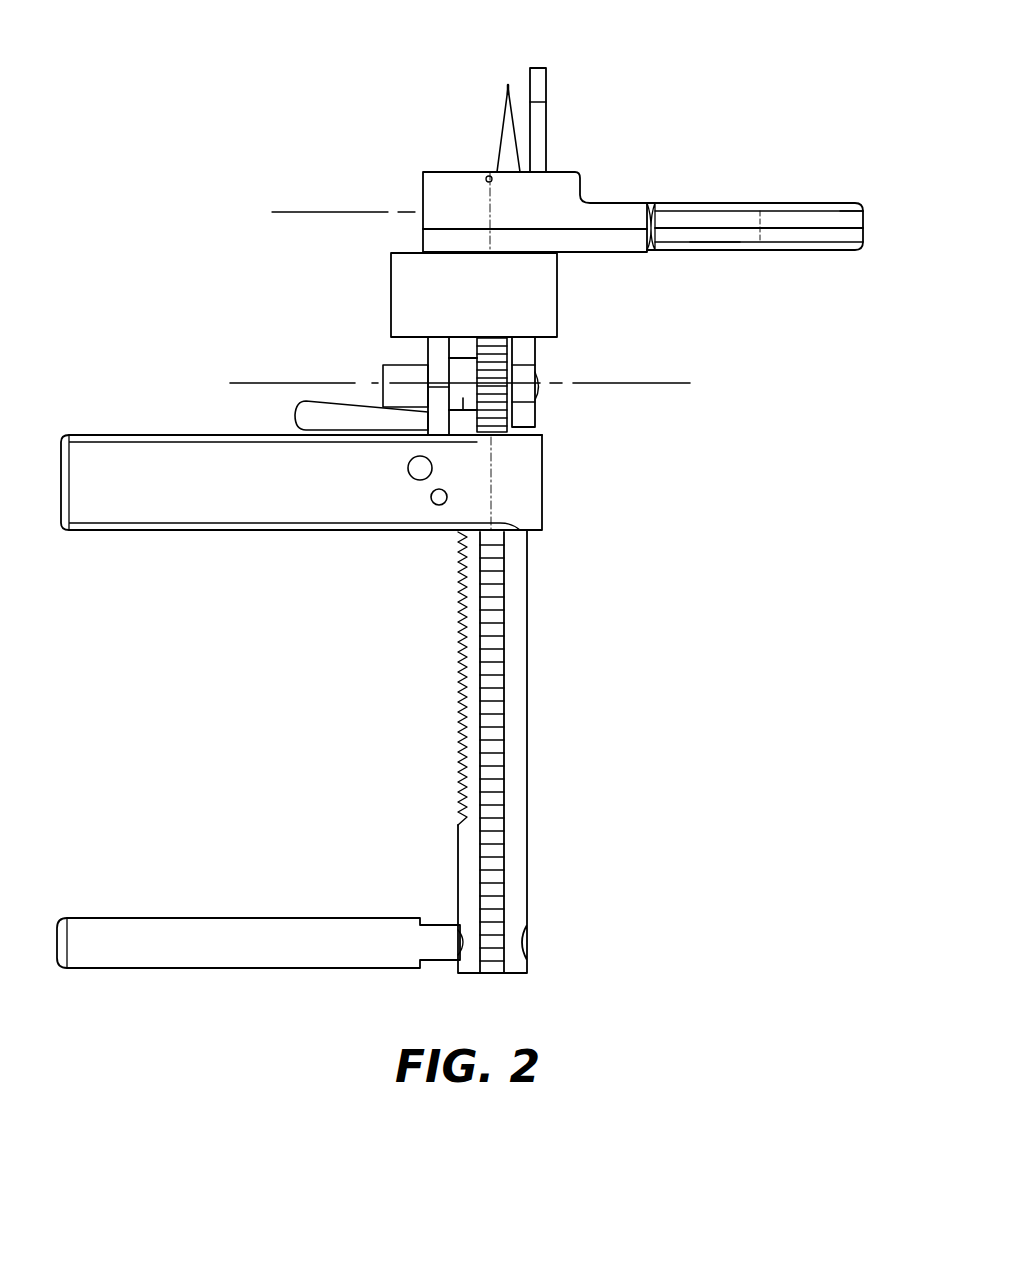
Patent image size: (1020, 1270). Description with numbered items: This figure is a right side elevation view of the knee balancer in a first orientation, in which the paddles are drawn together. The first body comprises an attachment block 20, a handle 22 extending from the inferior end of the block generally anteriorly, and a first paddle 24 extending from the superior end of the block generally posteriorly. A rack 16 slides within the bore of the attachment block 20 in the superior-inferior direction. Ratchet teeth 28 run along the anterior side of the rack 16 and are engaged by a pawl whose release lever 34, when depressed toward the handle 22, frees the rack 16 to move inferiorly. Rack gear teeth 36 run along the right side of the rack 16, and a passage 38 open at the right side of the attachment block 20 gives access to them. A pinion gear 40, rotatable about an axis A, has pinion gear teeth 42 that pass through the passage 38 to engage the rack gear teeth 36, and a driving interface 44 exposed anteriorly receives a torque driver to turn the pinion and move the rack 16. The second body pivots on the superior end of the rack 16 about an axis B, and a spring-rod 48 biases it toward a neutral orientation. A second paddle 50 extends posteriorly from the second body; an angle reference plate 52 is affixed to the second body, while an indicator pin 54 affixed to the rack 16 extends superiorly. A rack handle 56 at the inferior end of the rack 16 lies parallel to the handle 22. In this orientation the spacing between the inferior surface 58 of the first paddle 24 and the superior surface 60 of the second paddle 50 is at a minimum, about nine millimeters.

The rack 16 is at (527, 828).
The attachment block 20 is at (392, 252).
The handle 22 is at (178, 520).
The first paddle 24 is at (864, 240).
The ratchet teeth 28 is at (460, 688).
The release lever 34 is at (298, 420).
The rack gear teeth 36 is at (500, 690).
The passage 38 is at (493, 437).
The pinion gear 40 is at (463, 402).
The pinion gear teeth 42 is at (500, 364).
The driving interface 44 is at (384, 368).
The spring-rod 48 is at (487, 177).
The second paddle 50 is at (862, 212).
The angle reference plate 52 is at (541, 68).
The indicator pin 54 is at (505, 90).
The rack handle 56 is at (303, 925).
The inferior surface 58 is at (712, 252).
The superior surface 60 is at (690, 203).
The axis A is at (665, 383).
The axis B is at (300, 212).